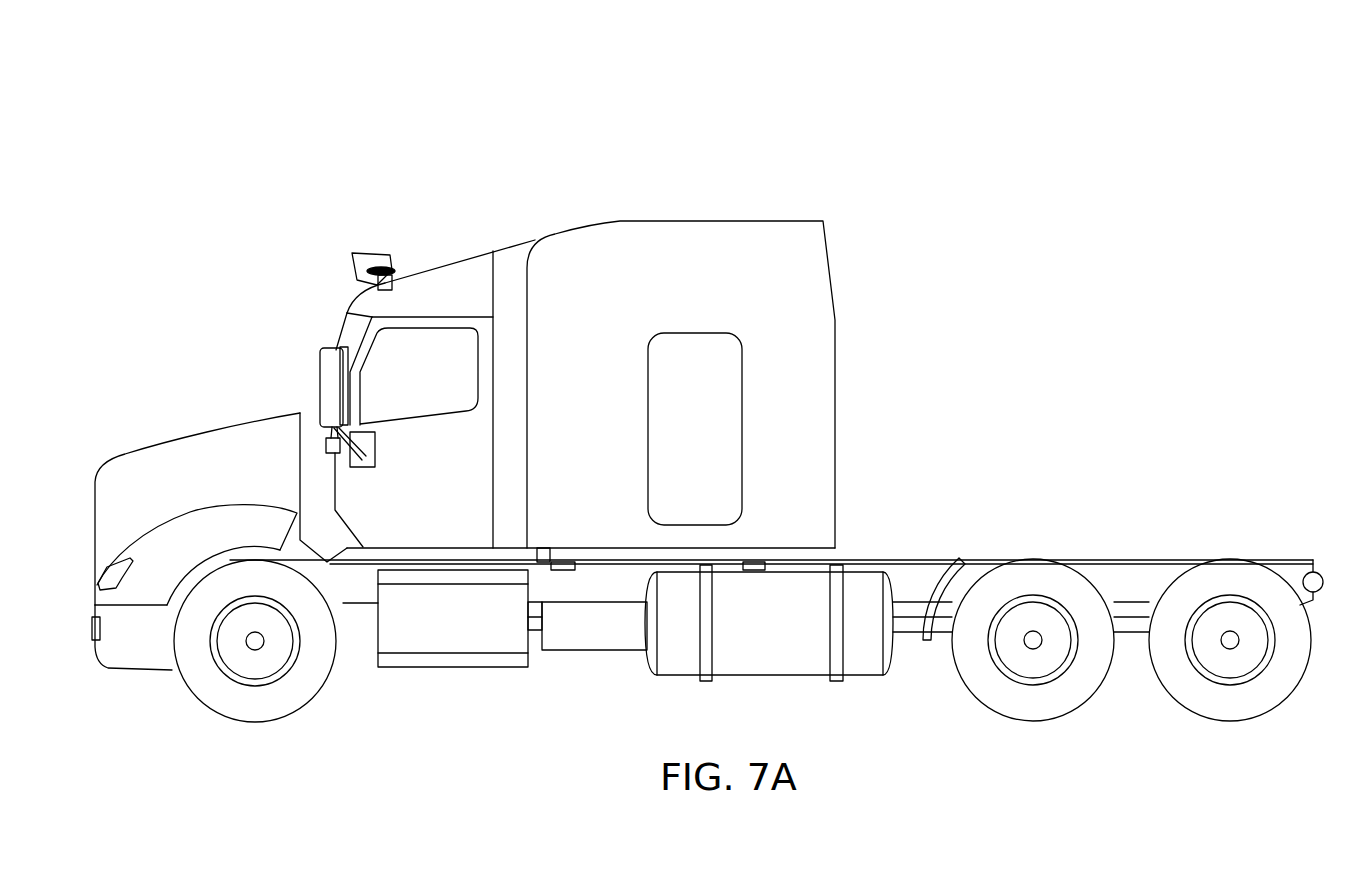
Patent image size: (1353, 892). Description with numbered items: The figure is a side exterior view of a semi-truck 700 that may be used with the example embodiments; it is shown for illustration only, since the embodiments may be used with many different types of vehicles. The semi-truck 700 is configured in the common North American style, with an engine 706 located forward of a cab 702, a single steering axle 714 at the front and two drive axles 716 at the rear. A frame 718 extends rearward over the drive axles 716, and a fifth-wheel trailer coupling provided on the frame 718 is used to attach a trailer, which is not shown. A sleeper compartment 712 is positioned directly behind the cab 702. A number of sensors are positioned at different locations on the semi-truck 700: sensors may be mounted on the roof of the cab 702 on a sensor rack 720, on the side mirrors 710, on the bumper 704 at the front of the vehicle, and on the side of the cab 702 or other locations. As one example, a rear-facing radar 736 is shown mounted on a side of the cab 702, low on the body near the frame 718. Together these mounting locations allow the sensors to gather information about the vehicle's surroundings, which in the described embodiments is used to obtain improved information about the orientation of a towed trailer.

The semi-truck 700 is at (396, 122).
The cab 702 is at (441, 256).
The bumper 704 is at (88, 668).
The engine 706 is at (174, 438).
The side mirrors 710 is at (331, 348).
The sleeper compartment 712 is at (712, 221).
The steering axle 714 is at (298, 683).
The drive axles 716 is at (1033, 703).
The frame 718 is at (1140, 560).
The sensor rack 720 is at (358, 245).
The rear-facing radar 736 is at (548, 548).